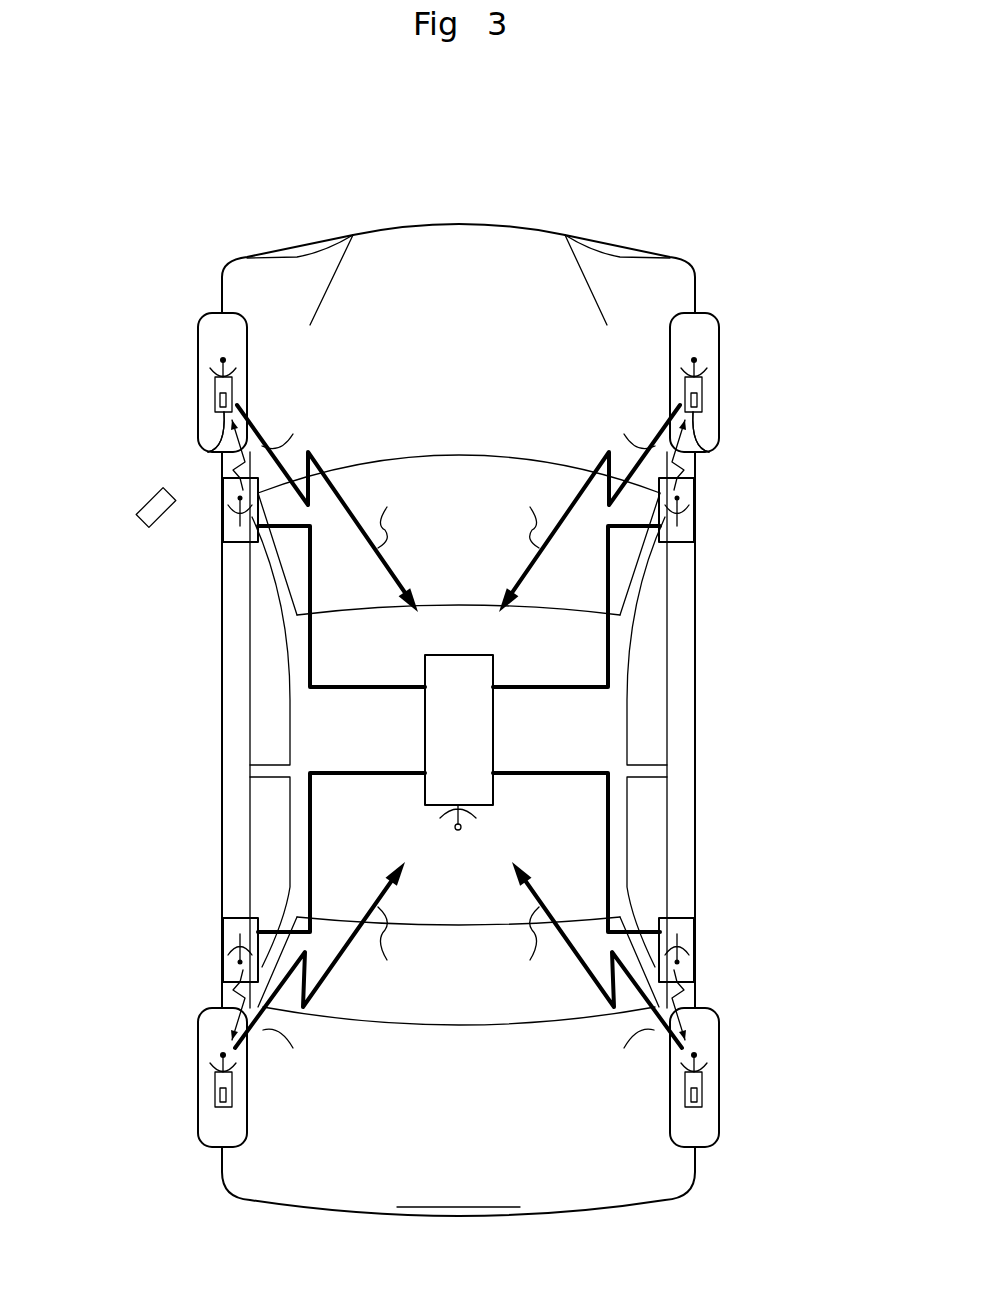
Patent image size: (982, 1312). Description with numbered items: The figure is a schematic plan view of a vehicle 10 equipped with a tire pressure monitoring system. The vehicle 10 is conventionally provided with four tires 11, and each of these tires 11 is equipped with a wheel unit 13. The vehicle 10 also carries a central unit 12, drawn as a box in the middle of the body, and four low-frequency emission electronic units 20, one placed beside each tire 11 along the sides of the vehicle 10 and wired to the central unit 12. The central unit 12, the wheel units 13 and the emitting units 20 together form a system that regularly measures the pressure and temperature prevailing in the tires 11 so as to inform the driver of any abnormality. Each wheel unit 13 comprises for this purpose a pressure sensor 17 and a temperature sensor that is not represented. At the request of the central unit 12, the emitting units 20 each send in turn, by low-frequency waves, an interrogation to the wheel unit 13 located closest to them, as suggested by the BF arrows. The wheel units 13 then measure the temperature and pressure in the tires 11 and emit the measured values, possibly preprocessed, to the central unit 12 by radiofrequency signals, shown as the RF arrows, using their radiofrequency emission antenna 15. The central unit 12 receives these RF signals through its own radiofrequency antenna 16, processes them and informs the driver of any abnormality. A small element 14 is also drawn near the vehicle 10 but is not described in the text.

The vehicle 10 is at (680, 648).
The tire 11 is at (712, 1071).
The central unit 12 is at (436, 773).
The wheel unit 13 is at (702, 1100).
The portable key / trigger device 14 is at (150, 527).
The radiofrequency emission antenna 15 is at (695, 360).
The radiofrequency antenna 16 is at (456, 828).
The pressure sensor 17 is at (709, 1147).
The low-frequency emission electronic unit 20 is at (688, 530).